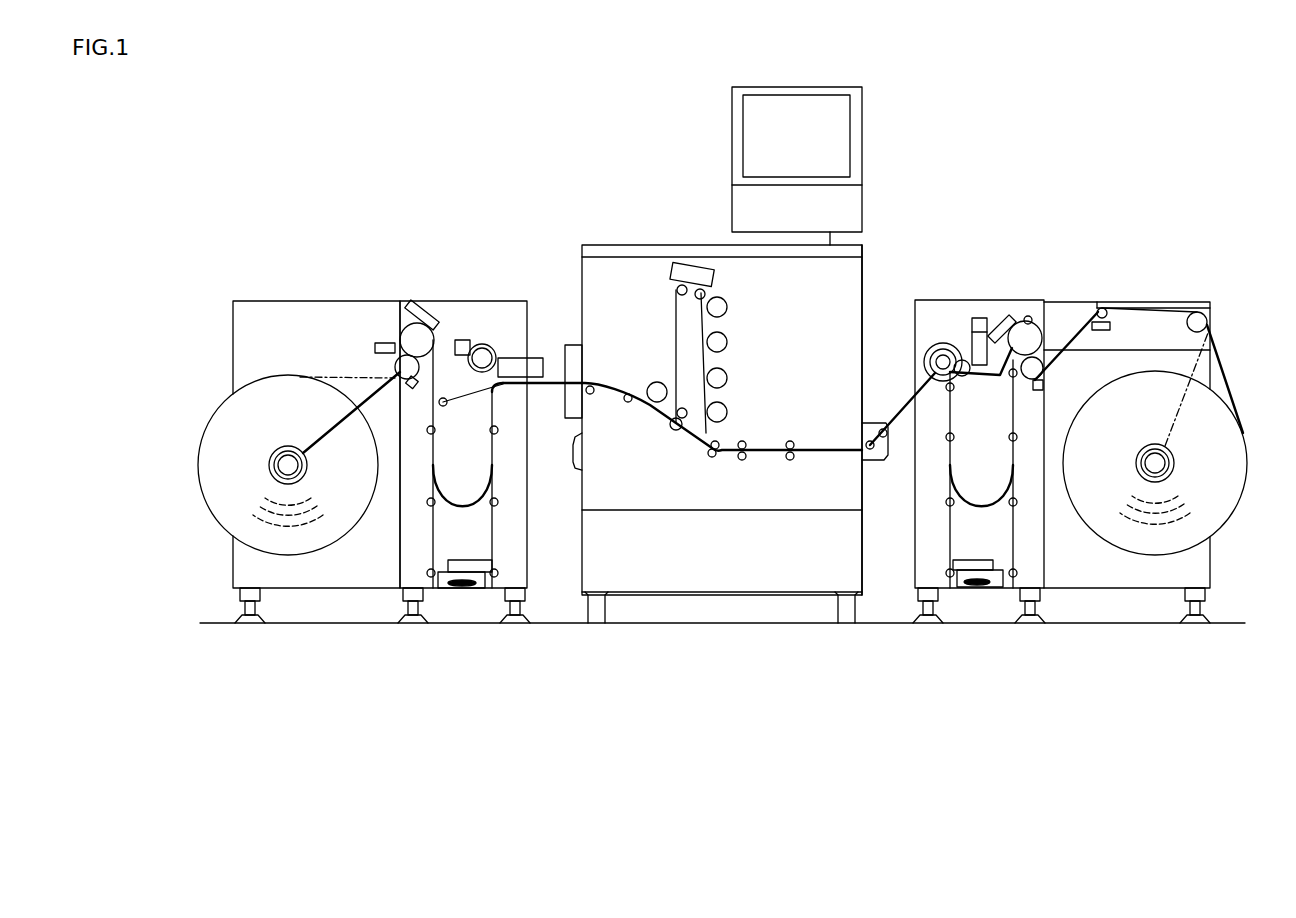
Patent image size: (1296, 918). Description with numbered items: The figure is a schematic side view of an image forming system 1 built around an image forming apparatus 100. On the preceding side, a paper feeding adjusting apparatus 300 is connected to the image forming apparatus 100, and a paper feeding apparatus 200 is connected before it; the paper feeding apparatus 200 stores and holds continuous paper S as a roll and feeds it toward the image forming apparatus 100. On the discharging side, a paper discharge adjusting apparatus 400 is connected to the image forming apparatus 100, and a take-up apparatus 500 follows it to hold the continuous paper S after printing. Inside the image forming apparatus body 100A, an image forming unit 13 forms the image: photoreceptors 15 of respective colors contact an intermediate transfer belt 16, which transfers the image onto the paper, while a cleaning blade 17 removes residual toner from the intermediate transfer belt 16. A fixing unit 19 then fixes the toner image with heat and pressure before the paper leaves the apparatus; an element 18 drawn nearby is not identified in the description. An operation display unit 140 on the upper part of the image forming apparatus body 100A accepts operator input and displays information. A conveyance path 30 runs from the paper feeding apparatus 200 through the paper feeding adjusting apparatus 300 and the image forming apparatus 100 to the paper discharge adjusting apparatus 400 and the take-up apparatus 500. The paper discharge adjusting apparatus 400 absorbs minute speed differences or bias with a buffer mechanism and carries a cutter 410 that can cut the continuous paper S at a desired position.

The image forming system 1 is at (752, 733).
The image forming unit 13 is at (730, 359).
The photoreceptors 15 is at (770, 351).
The intermediate transfer belt 16 is at (675, 320).
The cleaning blade 17 is at (670, 272).
The roller 18 is at (676, 430).
The fixing unit 19 is at (652, 385).
The conveyance path 30 is at (885, 430).
The image forming apparatus 100 is at (728, 327).
The image forming apparatus body 100A is at (865, 270).
The operation display unit 140 is at (797, 86).
The paper feeding apparatus 200 is at (1130, 302).
The paper feeding adjusting apparatus 300 is at (982, 300).
The paper discharge adjusting apparatus 400 is at (467, 300).
The cutter 410 is at (542, 357).
The take-up apparatus 500 is at (324, 300).
The continuous paper S is at (1232, 369).